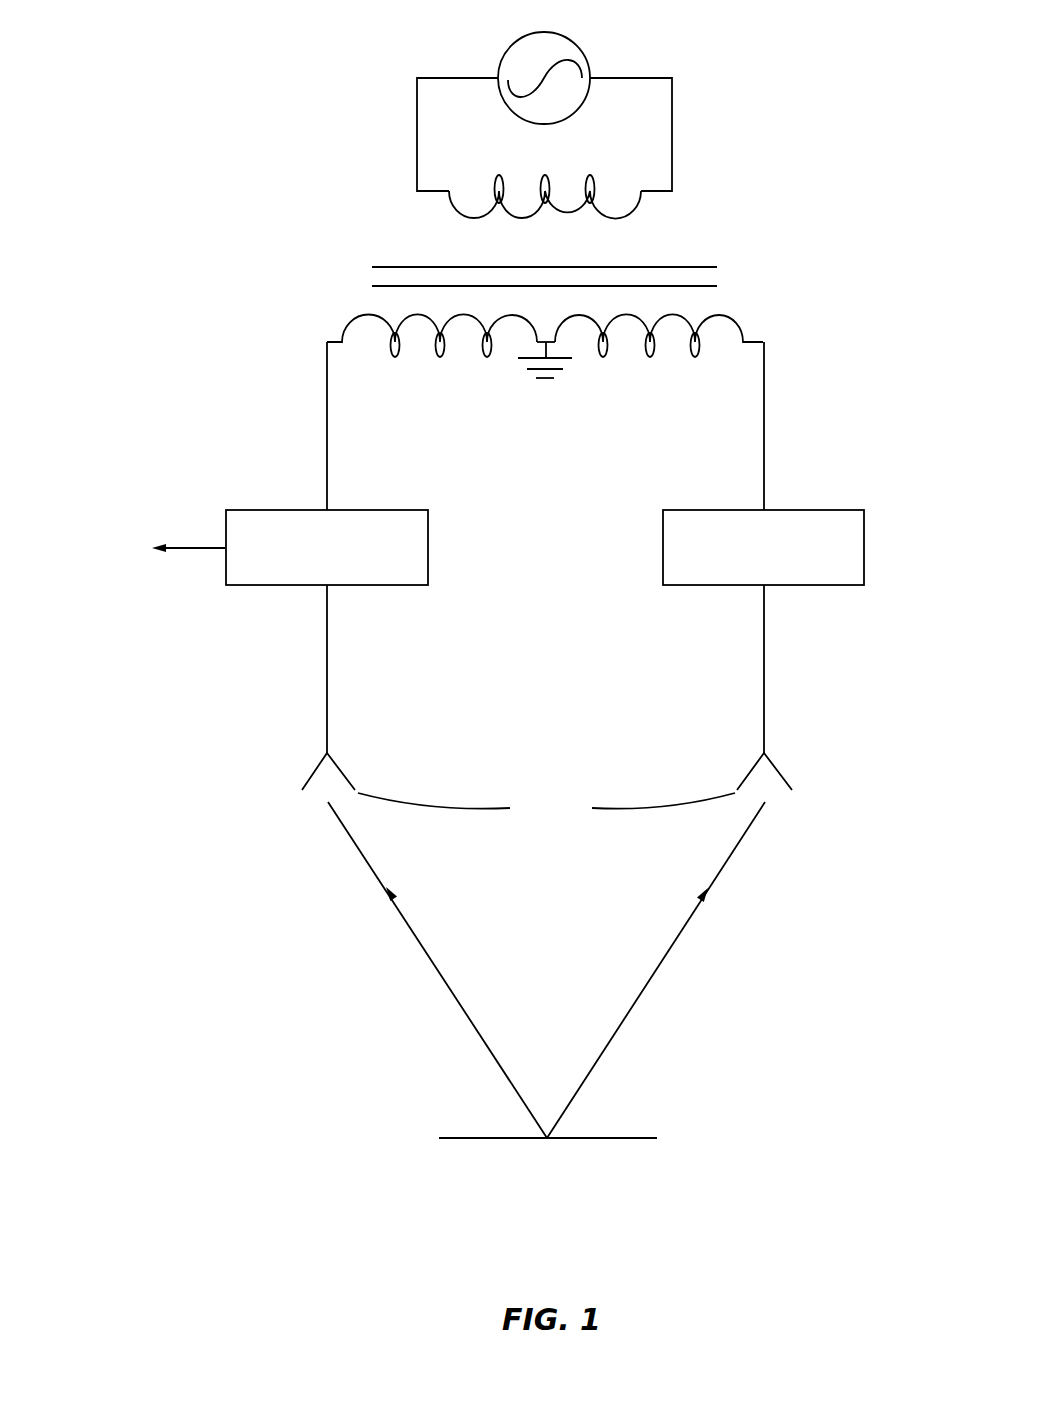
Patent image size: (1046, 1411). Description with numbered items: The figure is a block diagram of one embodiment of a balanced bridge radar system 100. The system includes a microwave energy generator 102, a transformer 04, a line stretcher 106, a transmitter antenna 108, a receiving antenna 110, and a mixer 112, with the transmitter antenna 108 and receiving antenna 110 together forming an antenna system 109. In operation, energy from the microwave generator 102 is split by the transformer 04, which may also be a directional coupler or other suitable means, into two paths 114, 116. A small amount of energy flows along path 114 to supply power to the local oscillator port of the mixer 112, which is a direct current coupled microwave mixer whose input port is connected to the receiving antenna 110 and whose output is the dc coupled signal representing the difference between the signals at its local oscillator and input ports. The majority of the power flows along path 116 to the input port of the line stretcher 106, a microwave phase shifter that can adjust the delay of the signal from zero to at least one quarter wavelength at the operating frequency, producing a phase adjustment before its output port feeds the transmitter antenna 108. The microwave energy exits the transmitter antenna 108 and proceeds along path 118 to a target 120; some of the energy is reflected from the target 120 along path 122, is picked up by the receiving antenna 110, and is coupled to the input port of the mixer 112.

The balanced bridge radar system 100 is at (893, 35).
The microwave energy generator 102 is at (585, 43).
The transformer 04 is at (378, 261).
The mixer 112 is at (545, 420).
The path 114 is at (327, 407).
The path 116 is at (767, 408).
The line stretcher 106 is at (878, 562).
The receiving antenna 110 is at (352, 767).
The transmitter antenna 108 is at (787, 762).
The antenna system 109 is at (546, 812).
The path 122 is at (408, 952).
The path 118 is at (688, 949).
The target 120 is at (625, 1178).